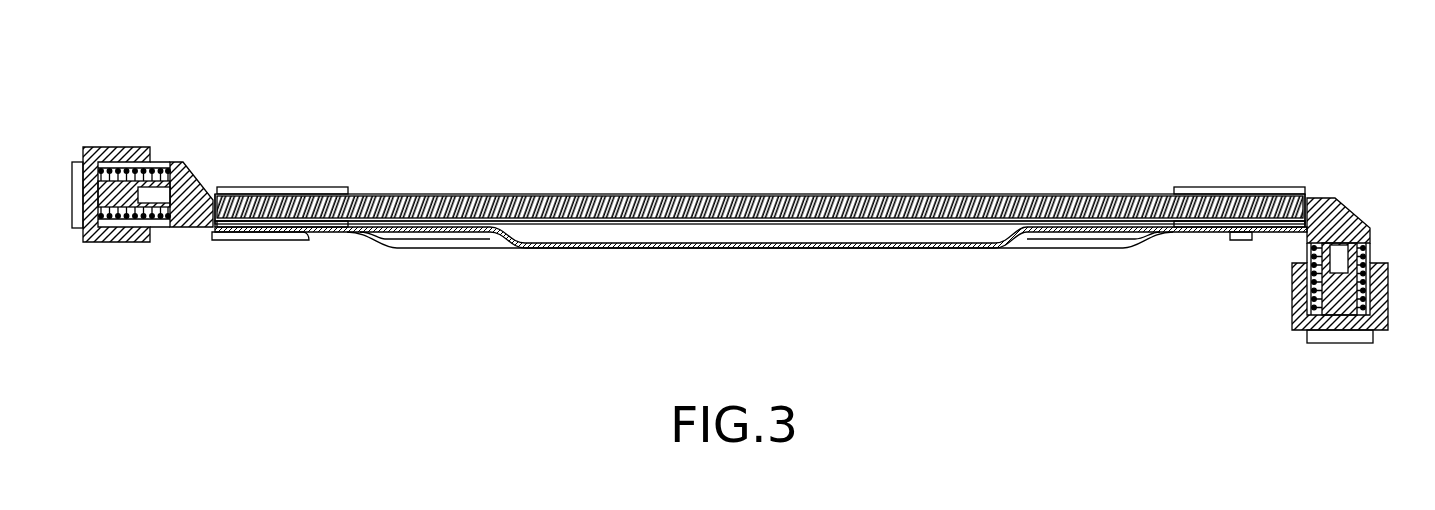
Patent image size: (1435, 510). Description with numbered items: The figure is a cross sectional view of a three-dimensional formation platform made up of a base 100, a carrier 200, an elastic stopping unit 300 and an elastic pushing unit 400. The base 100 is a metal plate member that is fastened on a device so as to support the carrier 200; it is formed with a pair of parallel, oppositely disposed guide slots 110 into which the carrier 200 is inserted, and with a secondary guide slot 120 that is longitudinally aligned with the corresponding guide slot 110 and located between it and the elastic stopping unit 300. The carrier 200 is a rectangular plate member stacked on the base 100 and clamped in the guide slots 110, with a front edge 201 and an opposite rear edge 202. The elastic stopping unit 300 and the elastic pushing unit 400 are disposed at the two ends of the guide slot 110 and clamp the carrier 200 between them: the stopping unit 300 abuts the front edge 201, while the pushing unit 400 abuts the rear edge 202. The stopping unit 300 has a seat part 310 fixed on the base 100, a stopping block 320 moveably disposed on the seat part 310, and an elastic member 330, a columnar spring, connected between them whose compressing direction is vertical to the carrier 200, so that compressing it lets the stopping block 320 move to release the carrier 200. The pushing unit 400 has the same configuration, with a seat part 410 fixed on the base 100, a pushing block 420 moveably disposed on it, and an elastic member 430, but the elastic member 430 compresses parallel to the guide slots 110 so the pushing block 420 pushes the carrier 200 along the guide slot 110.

The base 100 is at (817, 250).
The guide slot 110 is at (275, 187).
The secondary guide slot 120 is at (1242, 187).
The carrier 200 is at (775, 194).
The front edge 201 is at (1313, 196).
The rear edge 202 is at (211, 192).
The elastic stopping unit 300 is at (1364, 206).
The seat part 310 is at (1388, 295).
The stopping block 320 is at (1352, 198).
The elastic member 330 is at (1363, 245).
The elastic pushing unit 400 is at (103, 146).
The seat part 410 is at (126, 147).
The pushing block 420 is at (189, 170).
The elastic member 430 is at (152, 181).